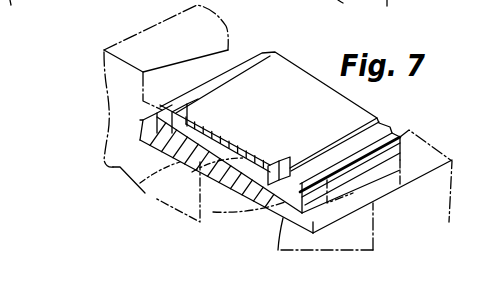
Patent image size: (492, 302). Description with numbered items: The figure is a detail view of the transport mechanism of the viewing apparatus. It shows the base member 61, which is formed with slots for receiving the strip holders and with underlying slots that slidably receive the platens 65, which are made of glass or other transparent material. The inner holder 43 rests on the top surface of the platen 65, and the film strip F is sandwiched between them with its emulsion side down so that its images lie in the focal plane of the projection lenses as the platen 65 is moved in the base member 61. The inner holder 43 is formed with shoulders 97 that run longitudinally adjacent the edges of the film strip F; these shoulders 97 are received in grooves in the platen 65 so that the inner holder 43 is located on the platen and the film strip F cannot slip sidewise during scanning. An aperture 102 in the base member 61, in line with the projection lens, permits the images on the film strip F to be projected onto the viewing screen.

The base member 61 is at (106, 169).
The inner holder 43 is at (207, 135).
The film strip F is at (245, 152).
The shoulders 97 is at (191, 128).
The platen 65 is at (183, 160).
The aperture 102 is at (204, 210).